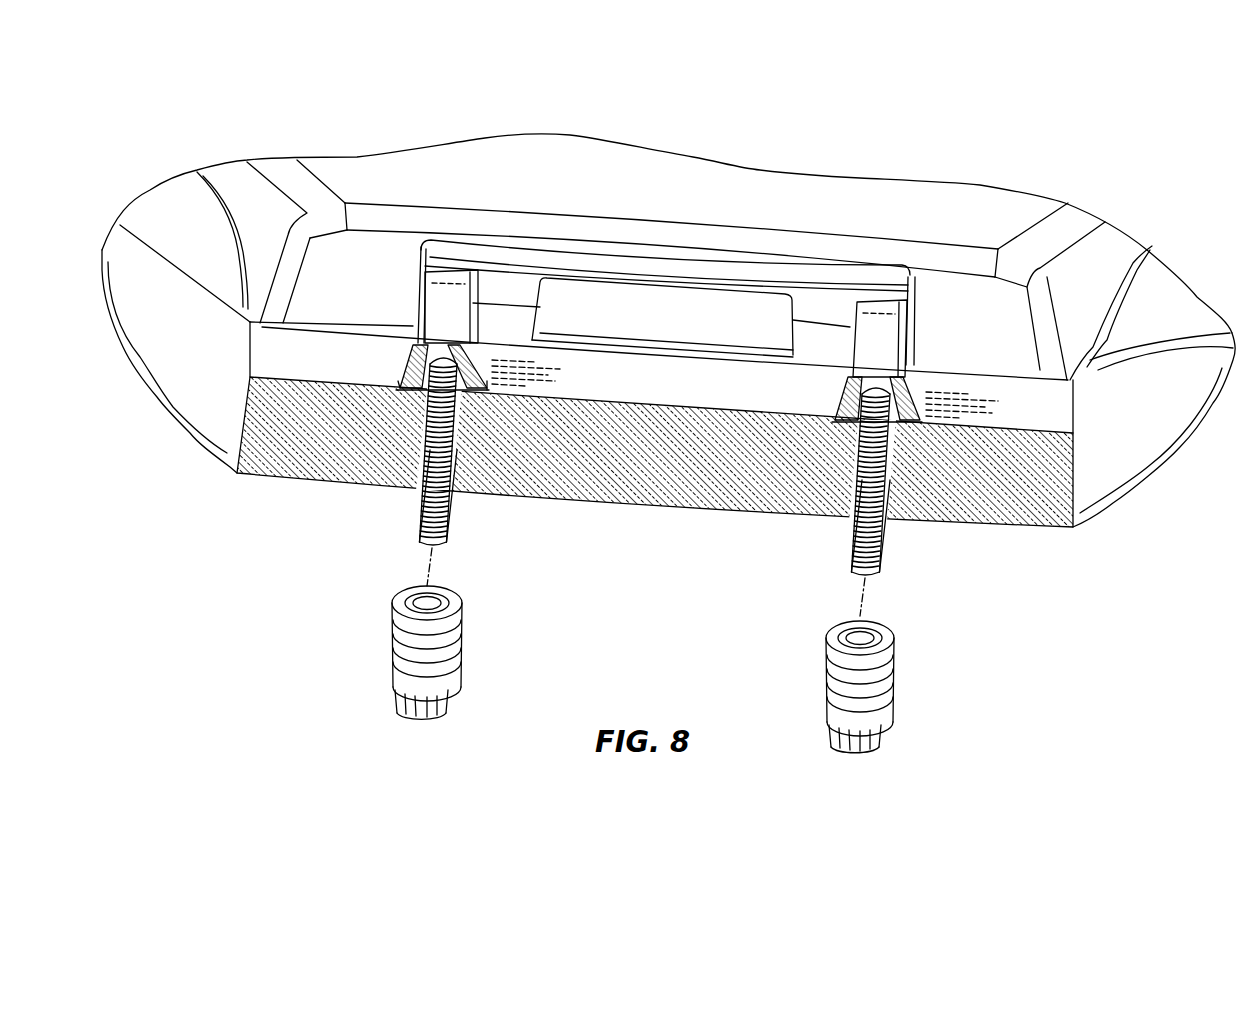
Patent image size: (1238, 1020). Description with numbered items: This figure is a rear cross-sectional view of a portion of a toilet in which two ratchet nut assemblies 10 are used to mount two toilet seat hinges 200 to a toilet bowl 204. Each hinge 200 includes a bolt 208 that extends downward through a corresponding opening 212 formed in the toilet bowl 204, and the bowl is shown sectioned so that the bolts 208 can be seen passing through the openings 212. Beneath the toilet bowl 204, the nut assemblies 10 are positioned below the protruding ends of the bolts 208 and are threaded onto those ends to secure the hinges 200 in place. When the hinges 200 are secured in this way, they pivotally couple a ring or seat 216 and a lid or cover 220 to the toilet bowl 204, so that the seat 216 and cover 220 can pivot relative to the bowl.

The lid or cover 220 is at (360, 168).
The ring or seat 216 is at (162, 217).
The toilet seat hinge 200 is at (487, 388).
The toilet bowl 204 is at (1113, 463).
The opening 212 is at (420, 500).
The bolt 208 is at (448, 517).
The nut assembly 10 is at (388, 657).